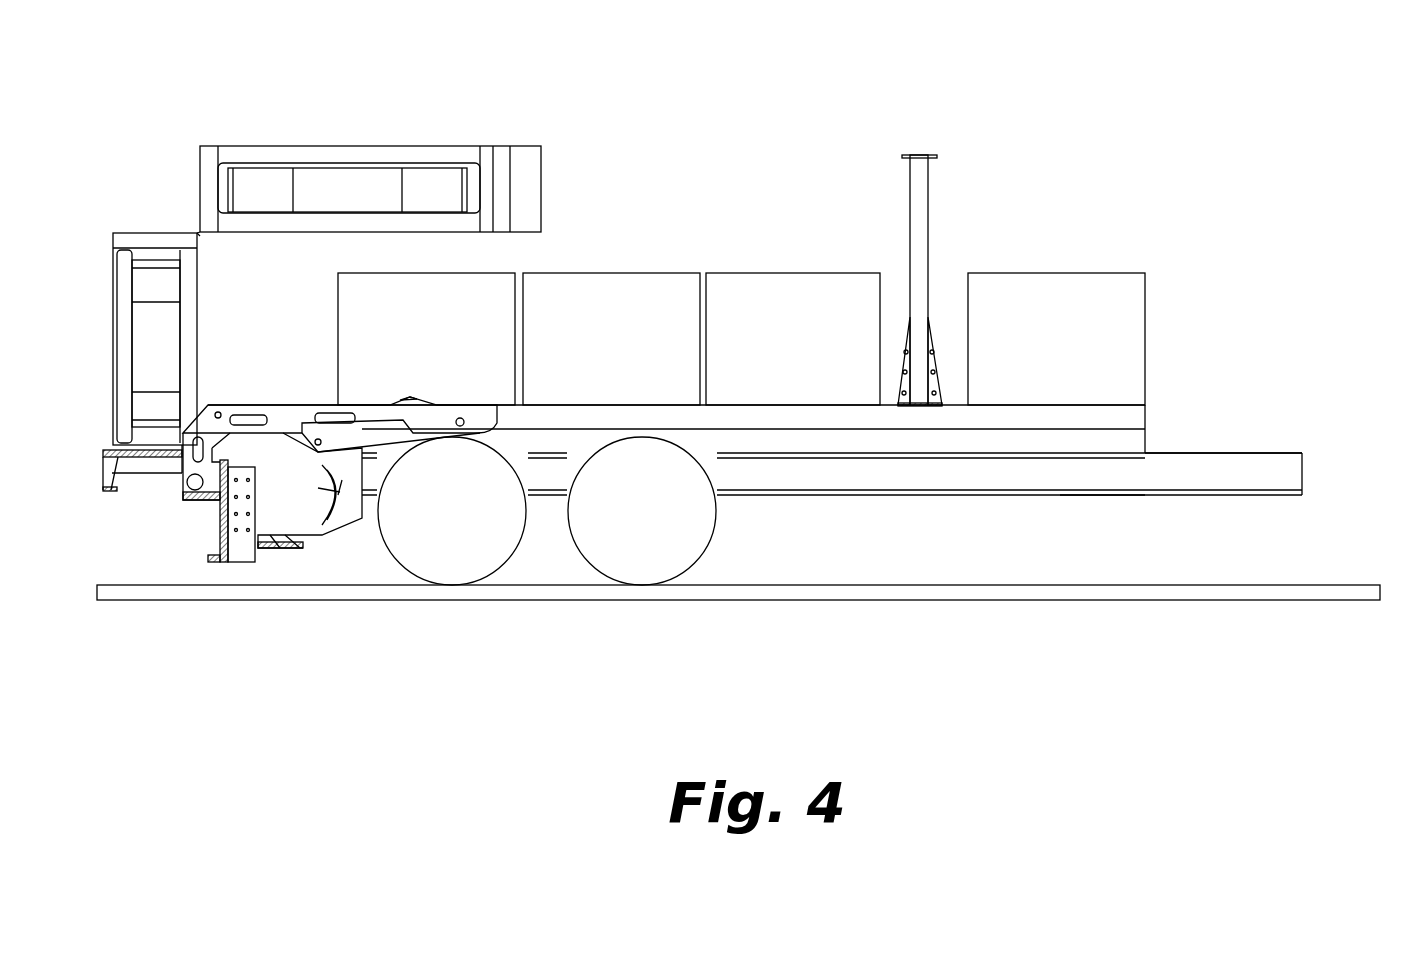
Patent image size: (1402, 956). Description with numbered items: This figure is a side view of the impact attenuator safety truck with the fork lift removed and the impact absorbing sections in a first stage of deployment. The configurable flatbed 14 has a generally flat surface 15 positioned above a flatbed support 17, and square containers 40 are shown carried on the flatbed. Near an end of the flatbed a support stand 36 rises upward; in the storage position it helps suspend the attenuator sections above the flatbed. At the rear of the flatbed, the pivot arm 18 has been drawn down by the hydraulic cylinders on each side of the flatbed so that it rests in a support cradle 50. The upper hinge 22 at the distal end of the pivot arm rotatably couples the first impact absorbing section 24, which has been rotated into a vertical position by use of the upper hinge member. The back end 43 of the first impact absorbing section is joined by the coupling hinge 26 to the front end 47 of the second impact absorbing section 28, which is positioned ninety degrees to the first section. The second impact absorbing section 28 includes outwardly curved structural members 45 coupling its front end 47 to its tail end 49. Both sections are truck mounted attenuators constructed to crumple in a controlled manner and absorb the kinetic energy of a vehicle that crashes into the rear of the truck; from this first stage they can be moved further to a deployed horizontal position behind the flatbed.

The configurable flatbed 14 is at (1285, 453).
The flat surface 15 is at (1182, 457).
The flatbed support 17 is at (1100, 483).
The pivot arm 18 is at (285, 427).
The upper hinge 22 is at (183, 493).
The first impact absorbing section 24 is at (113, 340).
The coupling hinge 26 is at (200, 235).
The second impact absorbing section 28 is at (376, 142).
The support stand 36 is at (928, 182).
The square containers 40 is at (1165, 322).
The back end 43 is at (122, 233).
The outwardly curved structural members 45 is at (437, 149).
The front end 47 is at (210, 148).
The tail end 49 is at (545, 193).
The support cradle 50 is at (378, 433).